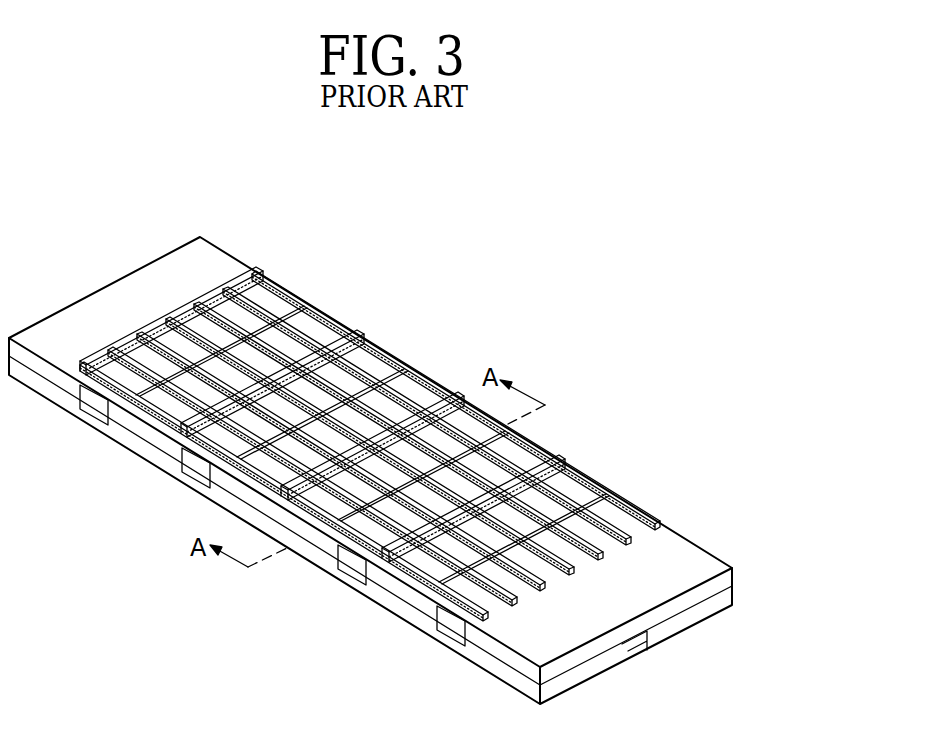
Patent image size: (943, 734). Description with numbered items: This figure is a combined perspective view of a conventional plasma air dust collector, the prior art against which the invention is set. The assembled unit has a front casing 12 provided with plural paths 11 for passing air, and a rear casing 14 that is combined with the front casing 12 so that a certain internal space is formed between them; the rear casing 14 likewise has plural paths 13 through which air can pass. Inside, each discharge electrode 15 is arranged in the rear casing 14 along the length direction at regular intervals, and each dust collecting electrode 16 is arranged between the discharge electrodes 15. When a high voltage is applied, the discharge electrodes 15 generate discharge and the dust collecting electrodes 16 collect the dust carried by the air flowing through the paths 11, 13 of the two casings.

The paths 11 is at (362, 398).
The front casing 12 is at (378, 431).
The paths 13 is at (553, 505).
The rear casing 14 is at (728, 588).
The discharge electrode 15 is at (562, 518).
The dust collecting electrode 16 is at (606, 496).